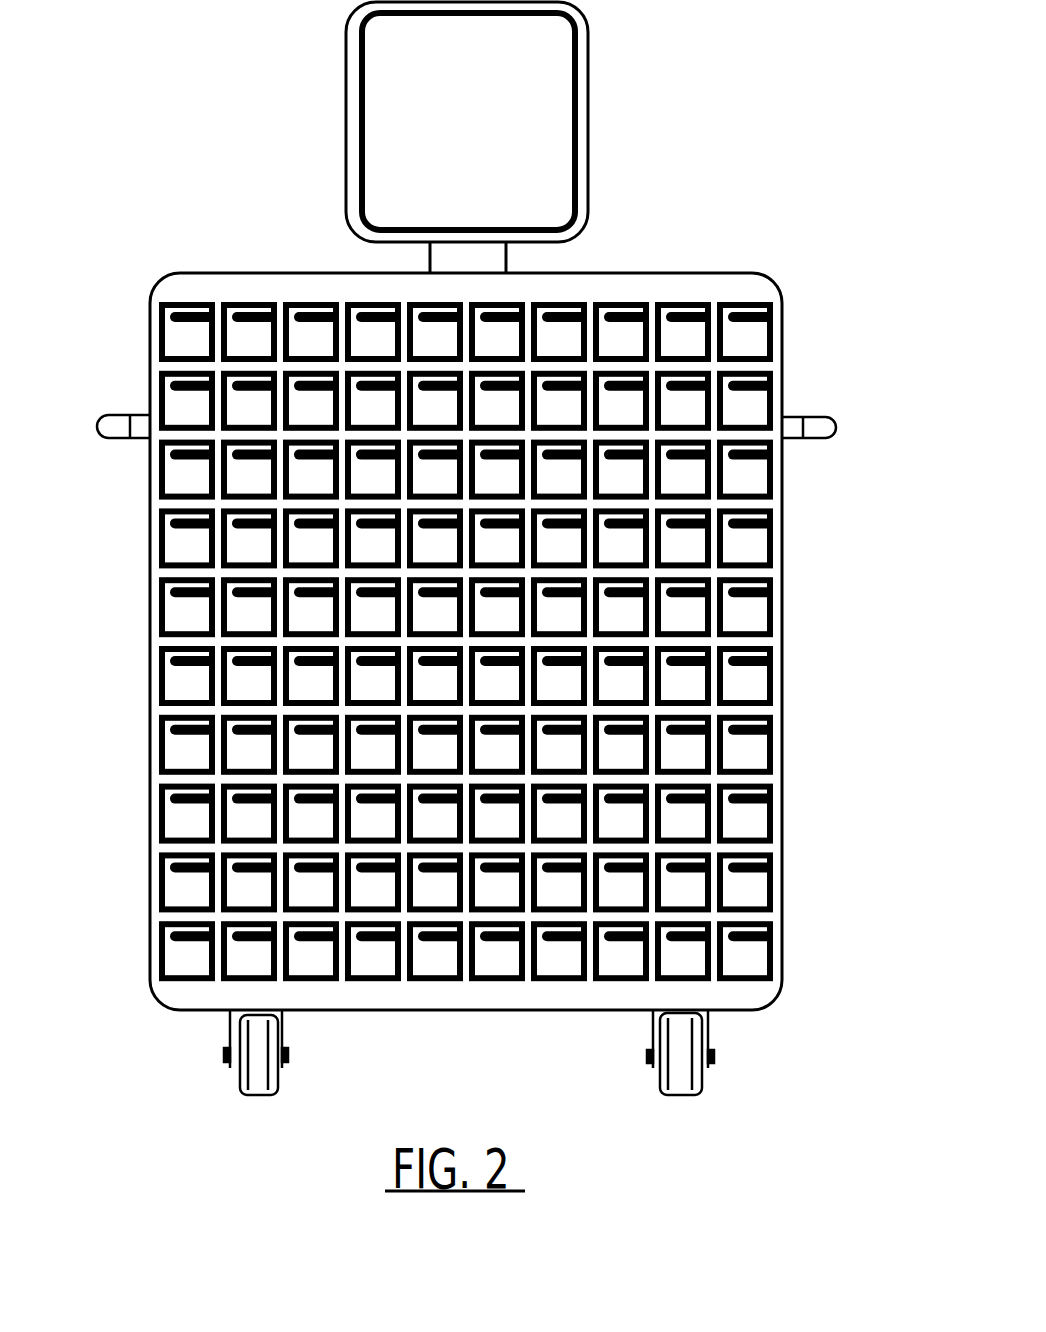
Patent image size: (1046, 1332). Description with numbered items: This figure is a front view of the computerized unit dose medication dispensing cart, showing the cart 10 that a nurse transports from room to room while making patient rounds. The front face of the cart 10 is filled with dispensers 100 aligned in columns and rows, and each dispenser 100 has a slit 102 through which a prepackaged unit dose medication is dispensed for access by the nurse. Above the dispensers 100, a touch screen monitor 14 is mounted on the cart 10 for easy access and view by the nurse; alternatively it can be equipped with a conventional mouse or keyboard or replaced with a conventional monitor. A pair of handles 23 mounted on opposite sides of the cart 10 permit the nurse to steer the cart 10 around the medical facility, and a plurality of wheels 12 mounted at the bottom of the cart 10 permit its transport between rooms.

The cart 10 is at (772, 280).
The wheels 12 is at (787, 1086).
The touch screen monitor 14 is at (588, 103).
The handles 23 is at (840, 428).
The dispensers 100 is at (750, 403).
The slit 102 is at (750, 305).